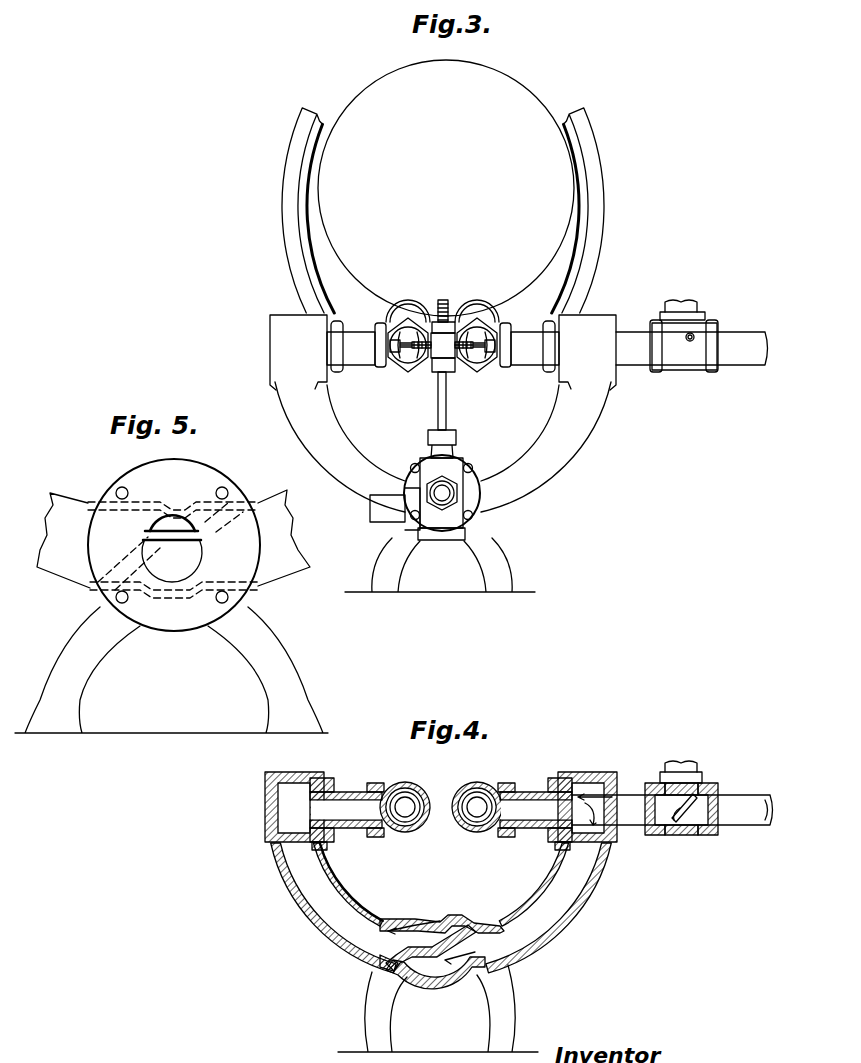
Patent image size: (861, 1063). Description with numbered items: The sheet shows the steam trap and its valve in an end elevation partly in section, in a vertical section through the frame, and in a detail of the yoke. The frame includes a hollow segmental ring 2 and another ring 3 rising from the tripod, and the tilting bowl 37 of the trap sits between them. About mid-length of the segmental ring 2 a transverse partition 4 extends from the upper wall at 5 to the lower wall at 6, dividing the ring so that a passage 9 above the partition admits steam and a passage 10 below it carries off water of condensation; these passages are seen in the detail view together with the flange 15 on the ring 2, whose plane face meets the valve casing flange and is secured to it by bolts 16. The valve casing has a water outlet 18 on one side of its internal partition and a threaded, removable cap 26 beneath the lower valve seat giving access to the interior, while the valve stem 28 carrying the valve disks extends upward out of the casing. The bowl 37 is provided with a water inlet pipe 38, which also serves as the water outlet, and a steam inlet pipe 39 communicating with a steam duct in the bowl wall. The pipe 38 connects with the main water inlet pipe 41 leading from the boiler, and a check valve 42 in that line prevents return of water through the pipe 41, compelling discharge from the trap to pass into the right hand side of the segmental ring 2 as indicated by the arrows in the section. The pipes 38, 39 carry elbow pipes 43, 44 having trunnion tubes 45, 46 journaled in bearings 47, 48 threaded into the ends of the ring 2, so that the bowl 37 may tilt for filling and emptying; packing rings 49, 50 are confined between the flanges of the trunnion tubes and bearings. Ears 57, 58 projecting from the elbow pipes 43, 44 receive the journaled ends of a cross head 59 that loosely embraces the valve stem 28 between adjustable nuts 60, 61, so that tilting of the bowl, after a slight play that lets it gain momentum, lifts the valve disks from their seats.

In FIG. 3, the segmental ring 2 is at (352, 441).
In FIG. 5, the segmental ring 2 is at (62, 492).
In FIG. 4, the segmental ring 2 is at (369, 912).
In FIG. 3, the ring 3 is at (284, 209).
In FIG. 5, the transverse partition 4 is at (187, 540).
In FIG. 4, the transverse partition 4 is at (444, 942).
In FIG. 4, the upper wall junction of partition 5 is at (474, 926).
In FIG. 4, the lower wall junction of partition 6 is at (392, 973).
In FIG. 5, the steam admission passage 9 is at (174, 515).
In FIG. 5, the water outlet passage 10 is at (186, 560).
In FIG. 3, the flange 15 is at (478, 481).
In FIG. 5, the flange 15 is at (206, 468).
In FIG. 3, the bolts 16 is at (471, 469).
In FIG. 5, the bolts 16 is at (119, 488).
In FIG. 3, the water outlet 18 is at (380, 511).
In FIG. 3, the removable cap 26 is at (439, 541).
In FIG. 3, the valve stem 28 is at (450, 403).
In FIG. 3, the bowl 37 is at (372, 94).
In FIG. 3, the water inlet pipe 38 is at (486, 299).
In FIG. 4, the water inlet pipe 38 is at (469, 790).
In FIG. 3, the steam inlet pipe 39 is at (410, 306).
In FIG. 4, the steam inlet pipe 39 is at (420, 799).
In FIG. 3, the main water inlet pipe 41 is at (740, 337).
In FIG. 4, the main water inlet pipe 41 is at (740, 801).
In FIG. 4, the check valve 42 is at (672, 826).
In FIG. 4, the elbow pipe 43 is at (484, 789).
In FIG. 4, the elbow pipe 44 is at (403, 790).
In FIG. 3, the trunnion tube 45 is at (539, 370).
In FIG. 4, the trunnion tube 45 is at (528, 790).
In FIG. 3, the trunnion tube 46 is at (354, 363).
In FIG. 4, the trunnion tube 46 is at (356, 790).
In FIG. 4, the bearing 47 is at (550, 846).
In FIG. 4, the bearing 48 is at (329, 848).
In FIG. 4, the packing ring 49 is at (542, 836).
In FIG. 4, the packing ring 50 is at (335, 838).
In FIG. 3, the ear 57 is at (492, 325).
In FIG. 3, the ear 58 is at (394, 325).
In FIG. 3, the cross head 59 is at (478, 369).
In FIG. 3, the adjustable nut 60 is at (447, 312).
In FIG. 3, the adjustable nut 61 is at (420, 376).